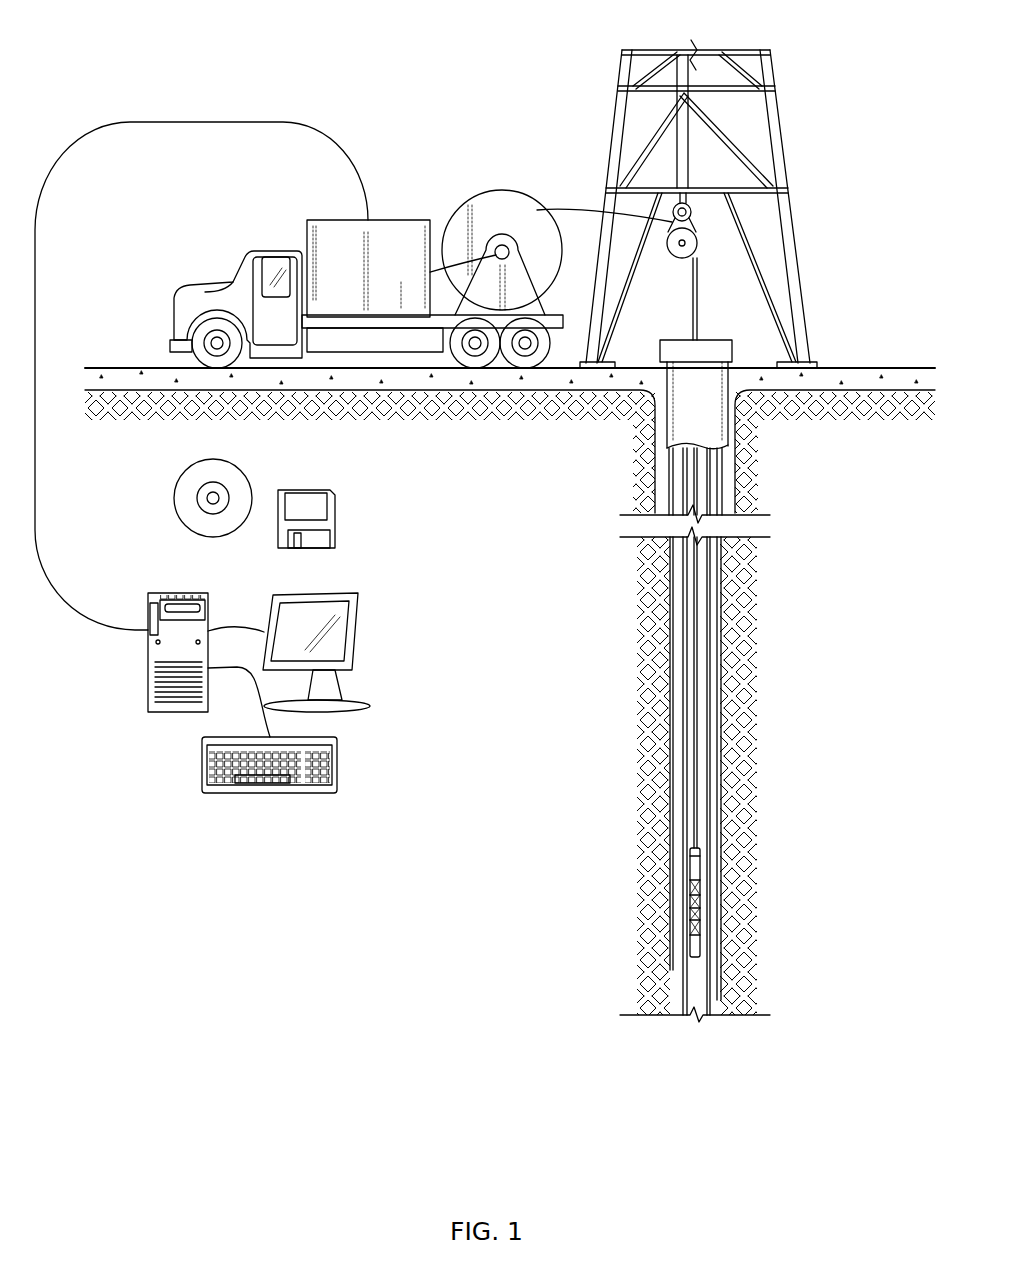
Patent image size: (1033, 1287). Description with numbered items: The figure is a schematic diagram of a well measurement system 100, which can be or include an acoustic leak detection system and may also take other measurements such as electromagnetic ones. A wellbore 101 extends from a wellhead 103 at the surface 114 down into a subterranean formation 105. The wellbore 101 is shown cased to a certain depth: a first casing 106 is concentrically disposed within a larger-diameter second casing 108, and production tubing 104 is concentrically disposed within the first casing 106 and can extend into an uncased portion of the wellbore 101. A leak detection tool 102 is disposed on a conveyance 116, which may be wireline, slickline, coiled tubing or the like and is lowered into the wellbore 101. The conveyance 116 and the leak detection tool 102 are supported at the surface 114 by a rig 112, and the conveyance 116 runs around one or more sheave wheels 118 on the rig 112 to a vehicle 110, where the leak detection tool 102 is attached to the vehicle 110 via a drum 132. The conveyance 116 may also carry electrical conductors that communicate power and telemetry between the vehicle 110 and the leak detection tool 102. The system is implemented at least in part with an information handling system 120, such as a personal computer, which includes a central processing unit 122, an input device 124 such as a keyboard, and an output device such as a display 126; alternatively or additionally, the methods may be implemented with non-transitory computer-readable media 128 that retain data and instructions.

The well measurement system 100 is at (191, 54).
The vehicle 110 is at (322, 219).
The drum 132 is at (504, 190).
The rig 112 is at (782, 130).
The sheave wheels 118 is at (668, 250).
The wellhead 103 is at (718, 336).
The surface 114 is at (845, 368).
The wellbore 101 is at (727, 562).
The subterranean formation 105 is at (930, 593).
The second casing 108 is at (728, 478).
The conveyance 116 is at (693, 553).
The first casing 106 is at (672, 797).
The production tubing 104 is at (708, 805).
The leak detection tool 102 is at (690, 908).
The non-transitory computer-readable media 128 is at (245, 468).
The central processing unit 122 is at (170, 593).
The display 126 is at (360, 632).
The input device 124 is at (338, 764).
The information handling system 120 is at (176, 790).